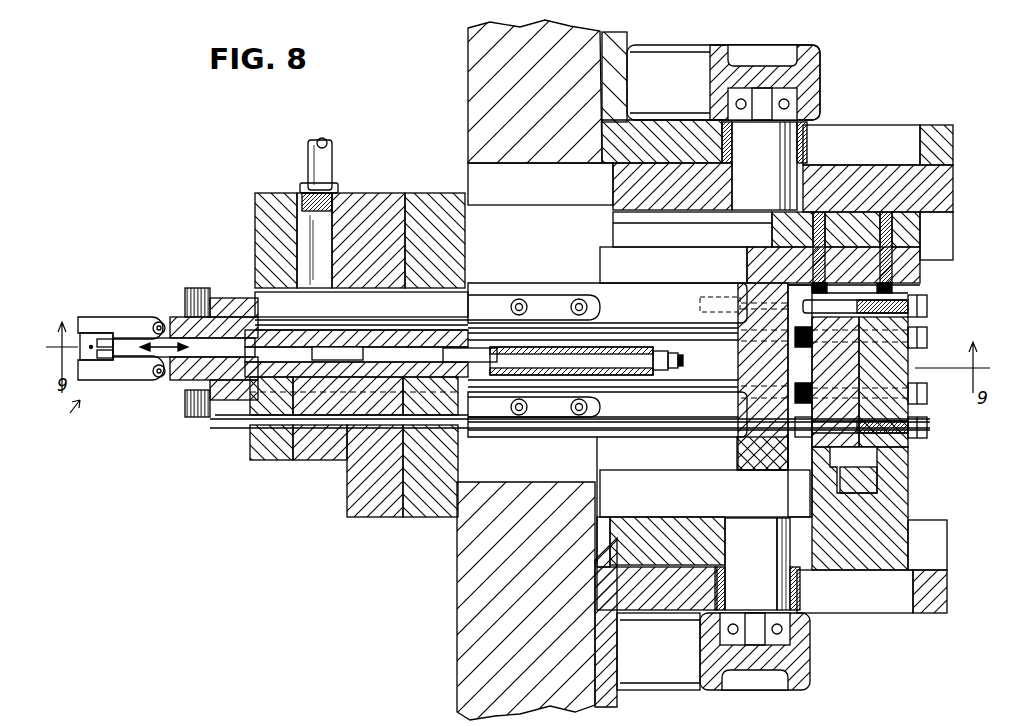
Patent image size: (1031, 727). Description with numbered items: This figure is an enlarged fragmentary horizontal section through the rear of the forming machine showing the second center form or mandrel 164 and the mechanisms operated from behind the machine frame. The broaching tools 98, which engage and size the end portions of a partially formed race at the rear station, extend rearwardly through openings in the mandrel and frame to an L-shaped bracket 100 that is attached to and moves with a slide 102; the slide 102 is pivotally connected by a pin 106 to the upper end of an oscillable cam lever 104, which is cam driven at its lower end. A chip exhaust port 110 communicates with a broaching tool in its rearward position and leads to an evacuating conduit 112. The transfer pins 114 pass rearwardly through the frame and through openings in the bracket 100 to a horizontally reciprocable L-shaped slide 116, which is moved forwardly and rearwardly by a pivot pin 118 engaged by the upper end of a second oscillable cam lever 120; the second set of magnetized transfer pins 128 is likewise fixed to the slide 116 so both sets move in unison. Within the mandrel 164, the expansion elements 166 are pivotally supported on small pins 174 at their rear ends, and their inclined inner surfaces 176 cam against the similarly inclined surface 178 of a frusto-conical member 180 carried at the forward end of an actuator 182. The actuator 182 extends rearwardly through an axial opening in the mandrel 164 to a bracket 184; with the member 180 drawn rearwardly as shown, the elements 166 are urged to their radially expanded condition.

The broaching tools 98 is at (190, 288).
The L-shaped bracket 100 is at (730, 265).
The slide 102 is at (950, 200).
The oscillable cam lever 104 is at (822, 90).
The pin 106 is at (767, 172).
The port 110 is at (330, 222).
The evacuating conduit 112 is at (332, 155).
The transfer pins 114 is at (215, 422).
The L-shaped slide 116 is at (910, 500).
The pivot pin 118 is at (743, 530).
The oscillable cam lever 120 is at (800, 665).
The transfer pins 128 is at (720, 345).
The mandrel 164 is at (66, 424).
The expansion elements 166 is at (100, 318).
The pins 174 is at (159, 322).
The inner surfaces 176 is at (100, 340).
The inclined surface 178 is at (90, 317).
The frusto-conical member 180 is at (82, 340).
The actuator 182 is at (205, 345).
The bracket 184 is at (630, 386).